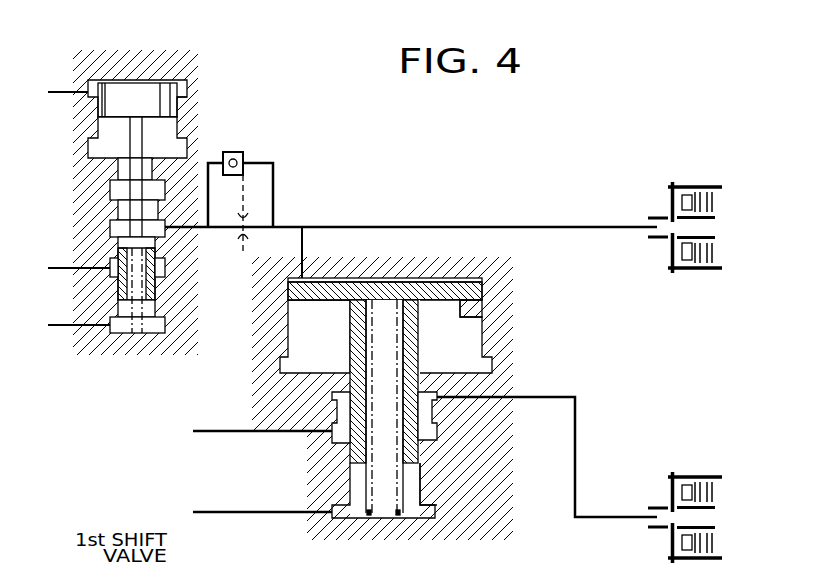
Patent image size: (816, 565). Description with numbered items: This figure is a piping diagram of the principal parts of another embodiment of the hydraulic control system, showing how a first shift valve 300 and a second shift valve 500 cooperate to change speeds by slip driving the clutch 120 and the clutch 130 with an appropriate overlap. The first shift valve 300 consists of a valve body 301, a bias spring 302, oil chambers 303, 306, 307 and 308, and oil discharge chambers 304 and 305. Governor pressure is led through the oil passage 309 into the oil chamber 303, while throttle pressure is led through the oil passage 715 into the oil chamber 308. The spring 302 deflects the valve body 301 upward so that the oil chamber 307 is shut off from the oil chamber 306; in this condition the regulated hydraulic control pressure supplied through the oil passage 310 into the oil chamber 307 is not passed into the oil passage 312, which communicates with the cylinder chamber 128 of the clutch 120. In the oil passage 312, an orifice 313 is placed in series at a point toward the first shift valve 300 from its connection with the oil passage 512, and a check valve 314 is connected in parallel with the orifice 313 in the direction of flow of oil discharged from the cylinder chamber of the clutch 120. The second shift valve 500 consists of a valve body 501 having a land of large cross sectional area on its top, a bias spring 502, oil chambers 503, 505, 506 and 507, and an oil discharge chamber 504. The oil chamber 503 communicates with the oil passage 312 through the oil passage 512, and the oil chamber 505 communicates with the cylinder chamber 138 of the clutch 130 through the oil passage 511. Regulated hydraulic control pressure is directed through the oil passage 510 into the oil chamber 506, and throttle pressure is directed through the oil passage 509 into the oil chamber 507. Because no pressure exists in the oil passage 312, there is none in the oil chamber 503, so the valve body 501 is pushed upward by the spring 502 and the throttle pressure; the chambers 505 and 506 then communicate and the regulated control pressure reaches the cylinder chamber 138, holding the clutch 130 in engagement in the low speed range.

The first shift valve 300 is at (150, 57).
The valve body 301 is at (177, 81).
The oil chamber 303 is at (187, 91).
The oil discharge chamber 304 is at (188, 135).
The oil discharge chamber 305 is at (110, 190).
The oil chamber 306 is at (113, 237).
The oil chamber 307 is at (165, 268).
The oil chamber 308 is at (165, 325).
The oil passage 309 is at (58, 92).
The oil passage 310 is at (87, 267).
The oil passage 312 is at (448, 227).
The orifice 313 is at (236, 238).
The check valve 314 is at (243, 151).
The bias spring 302 is at (133, 327).
The oil passage 715 is at (87, 325).
The second shift valve 500 is at (432, 258).
The valve body 501 is at (474, 302).
The bias spring 502 is at (372, 508).
The oil chamber 503 is at (478, 278).
The oil discharge chamber 504 is at (493, 366).
The oil chamber 505 is at (332, 395).
The oil chamber 506 is at (437, 428).
The oil chamber 507 is at (438, 500).
The oil passage 509 is at (270, 513).
The oil passage 510 is at (267, 432).
The oil passage 511 is at (508, 398).
The oil passage 512 is at (302, 248).
The clutch 120 is at (680, 163).
The cylinder chamber 128 is at (683, 202).
The clutch 130 is at (682, 453).
The cylinder chamber 138 is at (683, 488).